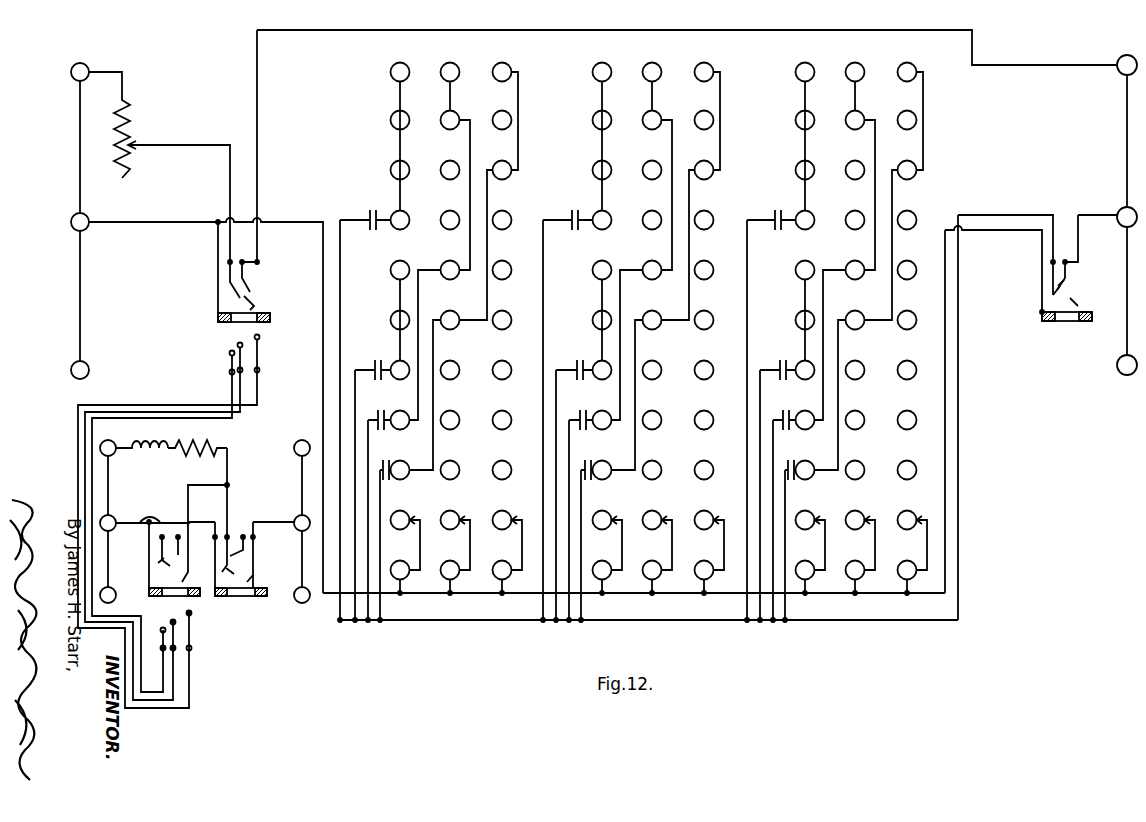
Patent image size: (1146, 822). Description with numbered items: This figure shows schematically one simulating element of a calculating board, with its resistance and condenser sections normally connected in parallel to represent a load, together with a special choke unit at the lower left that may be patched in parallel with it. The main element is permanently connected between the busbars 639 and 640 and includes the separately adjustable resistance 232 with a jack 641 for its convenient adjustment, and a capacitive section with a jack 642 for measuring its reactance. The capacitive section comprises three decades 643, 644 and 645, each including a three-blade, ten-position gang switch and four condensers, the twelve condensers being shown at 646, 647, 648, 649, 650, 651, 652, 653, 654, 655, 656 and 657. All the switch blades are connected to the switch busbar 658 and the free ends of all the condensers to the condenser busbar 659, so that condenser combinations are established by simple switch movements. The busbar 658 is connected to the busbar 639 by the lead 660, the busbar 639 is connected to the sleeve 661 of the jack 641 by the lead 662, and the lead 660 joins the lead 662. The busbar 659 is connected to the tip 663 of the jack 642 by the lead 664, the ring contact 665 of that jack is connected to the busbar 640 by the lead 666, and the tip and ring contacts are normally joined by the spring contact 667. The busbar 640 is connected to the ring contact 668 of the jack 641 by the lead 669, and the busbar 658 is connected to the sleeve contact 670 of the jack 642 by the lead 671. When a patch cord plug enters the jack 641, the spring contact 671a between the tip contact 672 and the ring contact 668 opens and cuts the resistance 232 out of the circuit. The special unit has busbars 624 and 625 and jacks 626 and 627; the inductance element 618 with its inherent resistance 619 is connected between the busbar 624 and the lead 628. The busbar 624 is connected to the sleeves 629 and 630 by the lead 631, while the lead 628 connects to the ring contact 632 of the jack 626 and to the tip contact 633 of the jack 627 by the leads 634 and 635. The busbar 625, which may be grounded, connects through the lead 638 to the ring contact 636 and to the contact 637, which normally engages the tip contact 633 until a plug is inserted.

The resistance 232 is at (134, 118).
The inductance element 618 is at (146, 460).
The inherent resistance 619 is at (190, 460).
The busbar 624 is at (105, 478).
The busbar 625 is at (298, 452).
The jack 626 is at (156, 606).
The jack 627 is at (263, 600).
The lead 628 is at (228, 452).
The sleeve 629 is at (196, 598).
The sleeve 630 is at (274, 601).
The lead 631 is at (155, 518).
The ring contact 632 is at (198, 553).
The tip contact 633 is at (248, 574).
The lead 634 is at (188, 500).
The lead 635 is at (229, 488).
The ring contact 636 is at (252, 582).
The contact 637 is at (250, 556).
The lead 638 is at (275, 522).
The busbar 639 is at (78, 302).
The busbar 640 is at (1125, 126).
The jack 641 is at (219, 329).
The jack 642 is at (1042, 332).
The decade 643 is at (465, 647).
The decade 644 is at (657, 632).
The decade 645 is at (867, 635).
The condenser 646 is at (390, 482).
The condenser 647 is at (382, 430).
The condenser 648 is at (378, 380).
The condenser 649 is at (372, 215).
The condenser 650 is at (592, 482).
The condenser 651 is at (585, 430).
The condenser 652 is at (580, 380).
The condenser 653 is at (574, 212).
The condenser 654 is at (795, 482).
The condenser 655 is at (788, 430).
The condenser 656 is at (783, 380).
The condenser 657 is at (776, 212).
The switch busbar 658 is at (525, 596).
The condenser busbar 659 is at (690, 622).
The lead 660 is at (286, 222).
The sleeve 661 is at (270, 318).
The lead 662 is at (216, 238).
The tip 663 is at (1060, 287).
The lead 664 is at (1010, 215).
The ring contact 665 is at (1075, 303).
The lead 666 is at (1082, 215).
The spring contact 667 is at (1062, 265).
The ring contact 668 is at (256, 306).
The lead 669 is at (616, 30).
The sleeve contact 670 is at (1085, 322).
The lead 671 is at (950, 468).
The spring contact 671a is at (250, 272).
The tip contact 672 is at (242, 290).